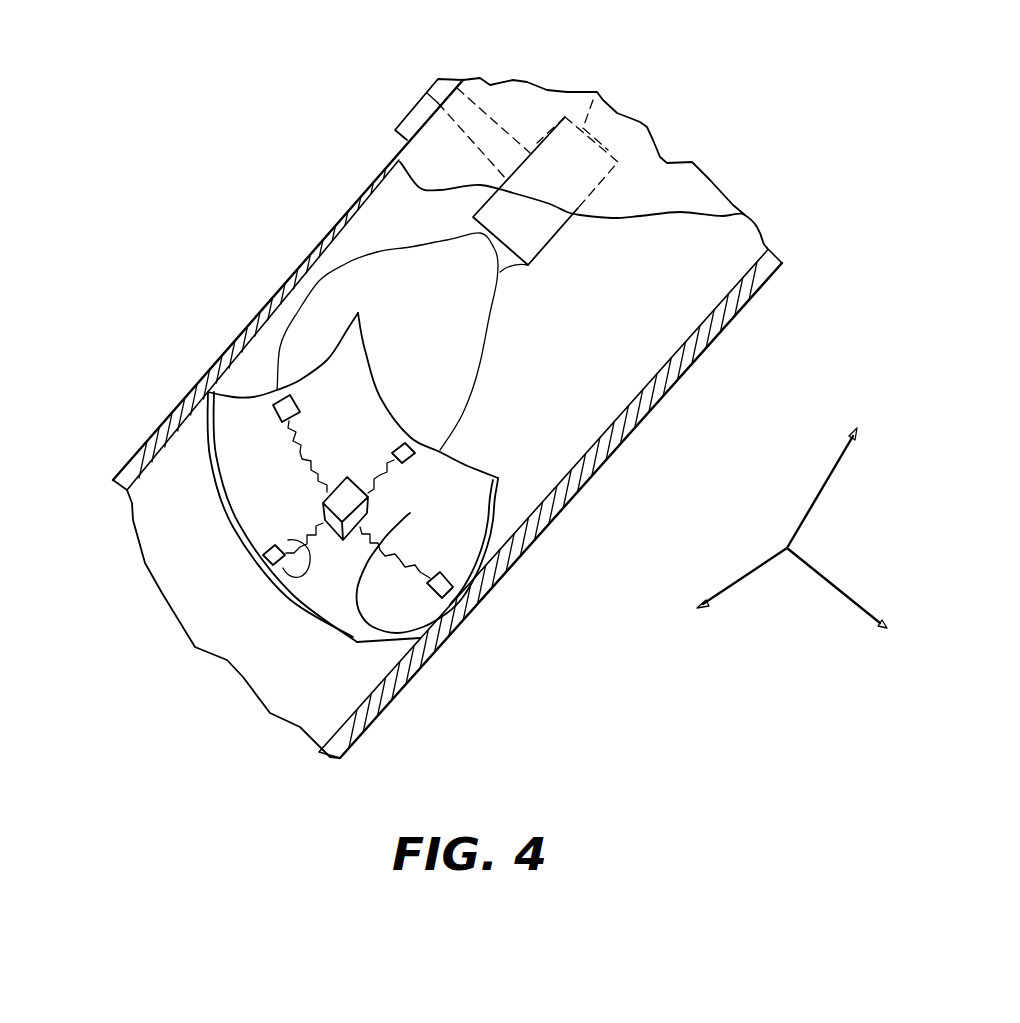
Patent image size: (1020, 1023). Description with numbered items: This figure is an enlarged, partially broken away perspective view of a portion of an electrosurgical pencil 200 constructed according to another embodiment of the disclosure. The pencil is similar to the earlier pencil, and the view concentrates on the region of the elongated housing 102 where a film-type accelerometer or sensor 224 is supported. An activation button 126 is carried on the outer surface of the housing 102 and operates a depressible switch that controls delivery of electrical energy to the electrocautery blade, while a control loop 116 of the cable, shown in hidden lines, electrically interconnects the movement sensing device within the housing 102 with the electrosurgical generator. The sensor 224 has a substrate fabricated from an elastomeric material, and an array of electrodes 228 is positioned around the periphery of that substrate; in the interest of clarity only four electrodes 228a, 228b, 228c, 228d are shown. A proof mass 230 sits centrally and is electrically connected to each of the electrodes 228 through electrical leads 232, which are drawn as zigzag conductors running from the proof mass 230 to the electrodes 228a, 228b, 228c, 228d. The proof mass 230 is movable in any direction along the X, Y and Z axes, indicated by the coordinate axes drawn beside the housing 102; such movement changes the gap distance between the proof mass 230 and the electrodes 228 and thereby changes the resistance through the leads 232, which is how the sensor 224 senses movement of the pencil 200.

The electrosurgical pencil 200 is at (294, 66).
The elongated housing 102 is at (145, 426).
The activation button 126 is at (443, 100).
The control loop 116 is at (637, 120).
The film-type accelerometer or sensor 224 is at (515, 493).
The array of electrodes 228 is at (463, 563).
The electrode 228a is at (447, 603).
The electrode 228b is at (267, 555).
The electrode 228c is at (274, 394).
The electrode 228d is at (406, 445).
The proof mass 230 is at (323, 512).
The electrical leads 232 is at (303, 457).